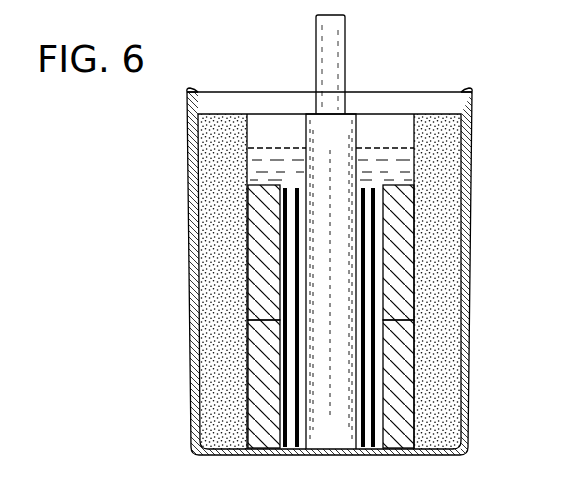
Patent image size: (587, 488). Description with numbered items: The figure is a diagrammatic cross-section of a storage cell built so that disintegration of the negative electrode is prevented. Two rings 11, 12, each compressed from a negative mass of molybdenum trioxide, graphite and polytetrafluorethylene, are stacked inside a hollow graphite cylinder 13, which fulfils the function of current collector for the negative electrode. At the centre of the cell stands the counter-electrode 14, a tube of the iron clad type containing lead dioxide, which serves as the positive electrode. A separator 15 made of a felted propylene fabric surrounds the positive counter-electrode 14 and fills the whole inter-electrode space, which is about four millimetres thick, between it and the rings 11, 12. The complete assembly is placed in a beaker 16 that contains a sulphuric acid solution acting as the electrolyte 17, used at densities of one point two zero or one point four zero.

The ring 11 is at (398, 223).
The ring 12 is at (395, 340).
The hollow graphite cylinder 13 is at (439, 342).
The counter-electrode 14 is at (347, 137).
The separator 15 is at (374, 413).
The beaker 16 is at (472, 96).
The electrolyte 17 is at (291, 162).